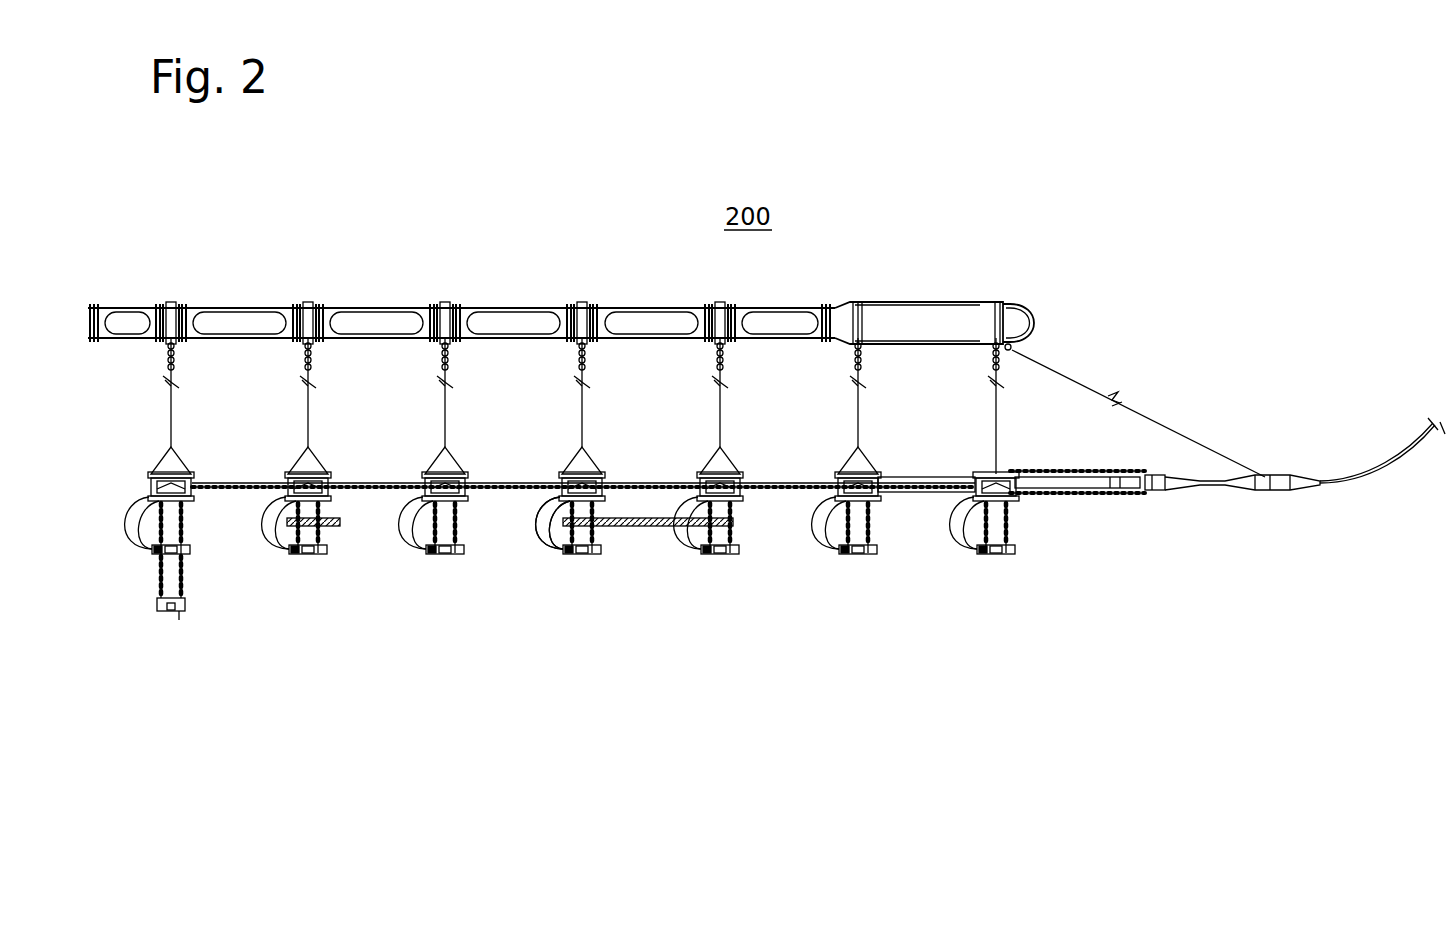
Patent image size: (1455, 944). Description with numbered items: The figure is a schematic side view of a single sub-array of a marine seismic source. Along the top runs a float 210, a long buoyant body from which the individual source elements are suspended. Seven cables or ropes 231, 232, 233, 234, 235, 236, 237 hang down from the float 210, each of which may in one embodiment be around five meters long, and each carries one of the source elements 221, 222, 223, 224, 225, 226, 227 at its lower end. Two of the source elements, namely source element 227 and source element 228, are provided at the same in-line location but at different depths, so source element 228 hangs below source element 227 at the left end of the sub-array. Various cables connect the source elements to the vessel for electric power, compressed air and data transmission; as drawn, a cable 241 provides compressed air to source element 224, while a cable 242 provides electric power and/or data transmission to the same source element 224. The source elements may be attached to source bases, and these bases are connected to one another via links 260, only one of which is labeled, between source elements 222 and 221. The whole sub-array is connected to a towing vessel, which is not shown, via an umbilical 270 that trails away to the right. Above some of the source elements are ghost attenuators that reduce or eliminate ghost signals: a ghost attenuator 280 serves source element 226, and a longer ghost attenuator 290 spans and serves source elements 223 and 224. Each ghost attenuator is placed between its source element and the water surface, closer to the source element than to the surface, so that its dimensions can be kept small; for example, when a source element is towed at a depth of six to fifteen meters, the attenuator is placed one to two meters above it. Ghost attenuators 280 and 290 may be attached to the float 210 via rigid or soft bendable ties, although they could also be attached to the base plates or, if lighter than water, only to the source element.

The float 210 is at (948, 305).
The source element 221 is at (995, 556).
The source element 222 is at (857, 556).
The source element 223 is at (719, 556).
The source element 224 is at (580, 556).
The source element 225 is at (440, 556).
The source element 226 is at (309, 556).
The source element 227 is at (186, 550).
The source element 228 is at (178, 612).
The cable or rope 231 is at (998, 438).
The cable or rope 232 is at (860, 420).
The cable or rope 233 is at (722, 415).
The cable or rope 234 is at (584, 415).
The cable or rope 235 is at (447, 415).
The cable or rope 236 is at (310, 415).
The cable or rope 237 is at (173, 415).
The cable 241 is at (530, 532).
The cable 242 is at (552, 548).
The link 260 is at (939, 478).
The umbilical 270 is at (1360, 483).
The ghost attenuator 280 is at (322, 523).
The ghost attenuator 290 is at (629, 527).